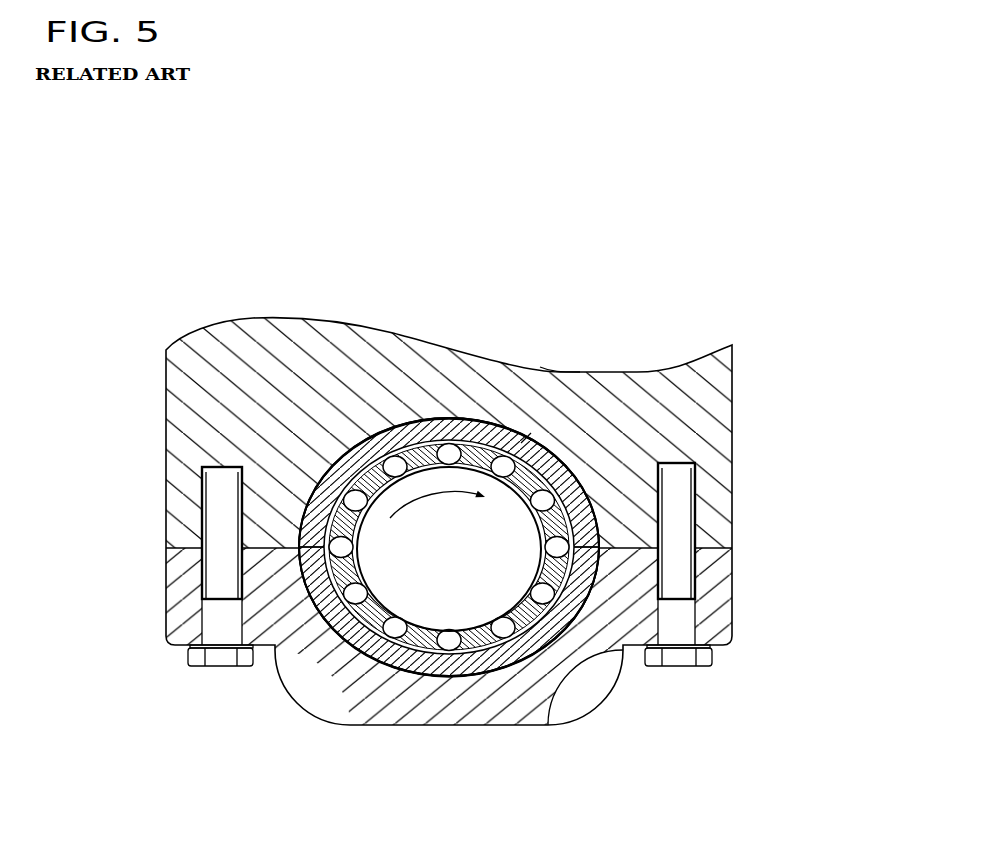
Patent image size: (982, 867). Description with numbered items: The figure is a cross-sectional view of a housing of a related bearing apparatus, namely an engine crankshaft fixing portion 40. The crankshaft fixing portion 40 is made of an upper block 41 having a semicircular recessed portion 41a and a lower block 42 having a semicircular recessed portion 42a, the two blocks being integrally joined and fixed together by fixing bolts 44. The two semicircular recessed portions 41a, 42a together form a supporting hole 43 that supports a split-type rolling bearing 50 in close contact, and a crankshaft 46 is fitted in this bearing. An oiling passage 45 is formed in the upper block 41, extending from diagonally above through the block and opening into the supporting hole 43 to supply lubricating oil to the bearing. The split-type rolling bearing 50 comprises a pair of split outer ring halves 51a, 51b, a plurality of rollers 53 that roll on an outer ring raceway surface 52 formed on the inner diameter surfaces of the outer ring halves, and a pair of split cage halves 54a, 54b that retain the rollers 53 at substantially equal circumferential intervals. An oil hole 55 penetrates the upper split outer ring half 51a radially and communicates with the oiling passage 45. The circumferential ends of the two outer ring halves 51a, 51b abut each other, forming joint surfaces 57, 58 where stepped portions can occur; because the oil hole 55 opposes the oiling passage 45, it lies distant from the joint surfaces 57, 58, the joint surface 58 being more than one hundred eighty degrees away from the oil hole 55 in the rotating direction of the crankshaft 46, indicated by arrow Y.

The engine crankshaft fixing portion 40 is at (480, 503).
The upper block 41 is at (477, 383).
The semicircular recessed portion 41a is at (498, 420).
The lower block 42 is at (621, 668).
The semicircular recessed portion 42a is at (475, 678).
The supporting hole 43 is at (453, 418).
The fixing bolts 44 is at (187, 664).
The oiling passage 45 is at (563, 373).
The crankshaft 46 is at (423, 480).
The split-type rolling bearing 50 is at (451, 523).
The split outer ring half 51a is at (585, 495).
The split outer ring half 51b is at (522, 668).
The outer ring raceway surface 52 is at (595, 690).
The rollers 53 is at (382, 463).
The split cage half 54a is at (320, 470).
The split cage half 54b is at (358, 612).
The oil hole 55 is at (521, 443).
The joint surface 57 is at (605, 555).
The joint surface 58 is at (298, 553).